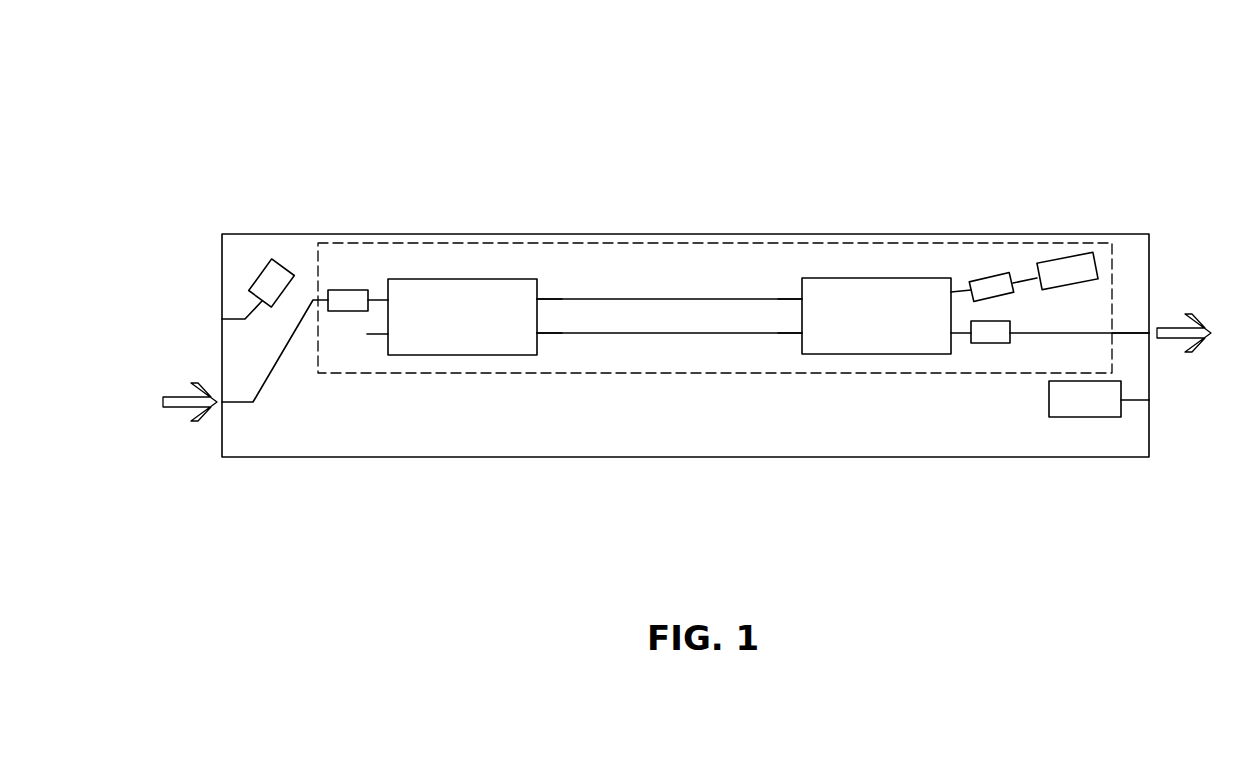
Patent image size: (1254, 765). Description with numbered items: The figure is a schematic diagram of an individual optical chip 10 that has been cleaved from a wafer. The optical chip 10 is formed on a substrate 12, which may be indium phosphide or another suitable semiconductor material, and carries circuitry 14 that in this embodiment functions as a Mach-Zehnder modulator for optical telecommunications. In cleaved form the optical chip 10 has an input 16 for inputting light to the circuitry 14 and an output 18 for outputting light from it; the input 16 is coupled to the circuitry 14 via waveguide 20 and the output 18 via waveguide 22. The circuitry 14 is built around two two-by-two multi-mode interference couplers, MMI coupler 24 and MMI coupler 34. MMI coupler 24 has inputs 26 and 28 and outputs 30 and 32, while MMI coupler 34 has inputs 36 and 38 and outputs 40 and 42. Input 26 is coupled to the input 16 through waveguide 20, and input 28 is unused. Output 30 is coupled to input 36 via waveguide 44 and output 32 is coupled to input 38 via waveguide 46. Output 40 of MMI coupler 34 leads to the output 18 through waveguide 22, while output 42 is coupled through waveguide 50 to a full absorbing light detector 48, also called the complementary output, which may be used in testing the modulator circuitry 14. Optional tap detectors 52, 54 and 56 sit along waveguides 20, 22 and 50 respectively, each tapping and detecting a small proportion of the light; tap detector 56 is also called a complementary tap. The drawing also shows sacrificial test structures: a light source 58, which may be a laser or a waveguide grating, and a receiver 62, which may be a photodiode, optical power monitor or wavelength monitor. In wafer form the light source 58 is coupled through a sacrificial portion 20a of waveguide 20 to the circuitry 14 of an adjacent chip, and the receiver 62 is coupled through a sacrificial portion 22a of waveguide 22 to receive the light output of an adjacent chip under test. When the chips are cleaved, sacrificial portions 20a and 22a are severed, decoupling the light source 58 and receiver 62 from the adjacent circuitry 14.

The optical chip 10 is at (1140, 99).
The substrate 12 is at (462, 457).
The circuitry 14 is at (658, 243).
The input 16 is at (215, 407).
The output 18 is at (1152, 338).
The waveguide 20 is at (273, 372).
The sacrificial portion 20a is at (1140, 403).
The waveguide 22 is at (1114, 336).
The sacrificial portion 22a is at (222, 319).
The MMI coupler 24 is at (457, 279).
The input 26 is at (383, 300).
The input 28 is at (375, 334).
The output 30 is at (547, 299).
The output 32 is at (538, 335).
The MMI coupler 34 is at (882, 278).
The input 36 is at (795, 299).
The input 38 is at (794, 334).
The output 40 is at (960, 333).
The output 42 is at (955, 292).
The waveguide 44 is at (630, 299).
The waveguide 46 is at (722, 333).
The full absorbing light detector 48 is at (1078, 254).
The waveguide 50 is at (1023, 286).
The tap detector 52 is at (343, 290).
The tap detector 54 is at (990, 343).
The tap detector 56 is at (988, 276).
The light source 58 is at (1085, 417).
The receiver 62 is at (257, 280).